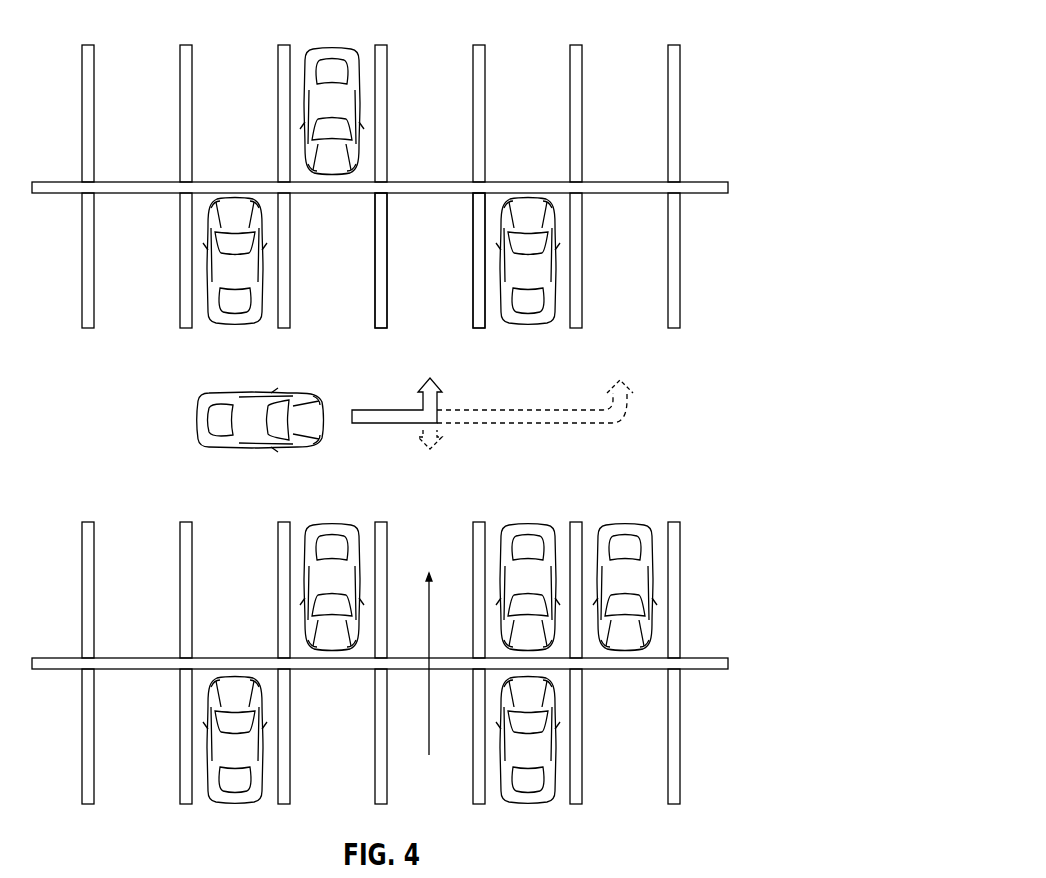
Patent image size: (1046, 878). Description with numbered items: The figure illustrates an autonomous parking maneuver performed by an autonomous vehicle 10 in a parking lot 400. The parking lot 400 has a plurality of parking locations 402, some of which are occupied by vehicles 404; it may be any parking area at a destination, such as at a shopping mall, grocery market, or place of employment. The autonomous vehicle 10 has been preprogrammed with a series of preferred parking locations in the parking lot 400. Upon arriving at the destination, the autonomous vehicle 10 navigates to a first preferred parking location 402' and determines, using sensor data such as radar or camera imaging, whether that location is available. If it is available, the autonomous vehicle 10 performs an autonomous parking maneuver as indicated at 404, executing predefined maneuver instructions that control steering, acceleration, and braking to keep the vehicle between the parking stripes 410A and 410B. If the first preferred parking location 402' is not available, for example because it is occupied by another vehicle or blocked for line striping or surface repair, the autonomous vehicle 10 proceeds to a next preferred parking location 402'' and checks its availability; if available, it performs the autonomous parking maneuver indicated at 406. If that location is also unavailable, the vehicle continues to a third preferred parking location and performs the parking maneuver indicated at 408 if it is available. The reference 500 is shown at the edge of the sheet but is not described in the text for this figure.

The parking lot 400 is at (690, 32).
The parking locations 402 is at (381, 424).
The first preferred parking location 402' is at (430, 270).
The next preferred parking location 402'' is at (493, 498).
The vehicles / autonomous parking maneuver 404 is at (338, 83).
The autonomous parking maneuver 406 is at (441, 438).
The parking maneuver 408 is at (631, 395).
The parking stripe 410A is at (367, 320).
The parking stripe 410B is at (483, 336).
The autonomous vehicle 10 is at (237, 418).
The parking lot 500 is at (718, 876).